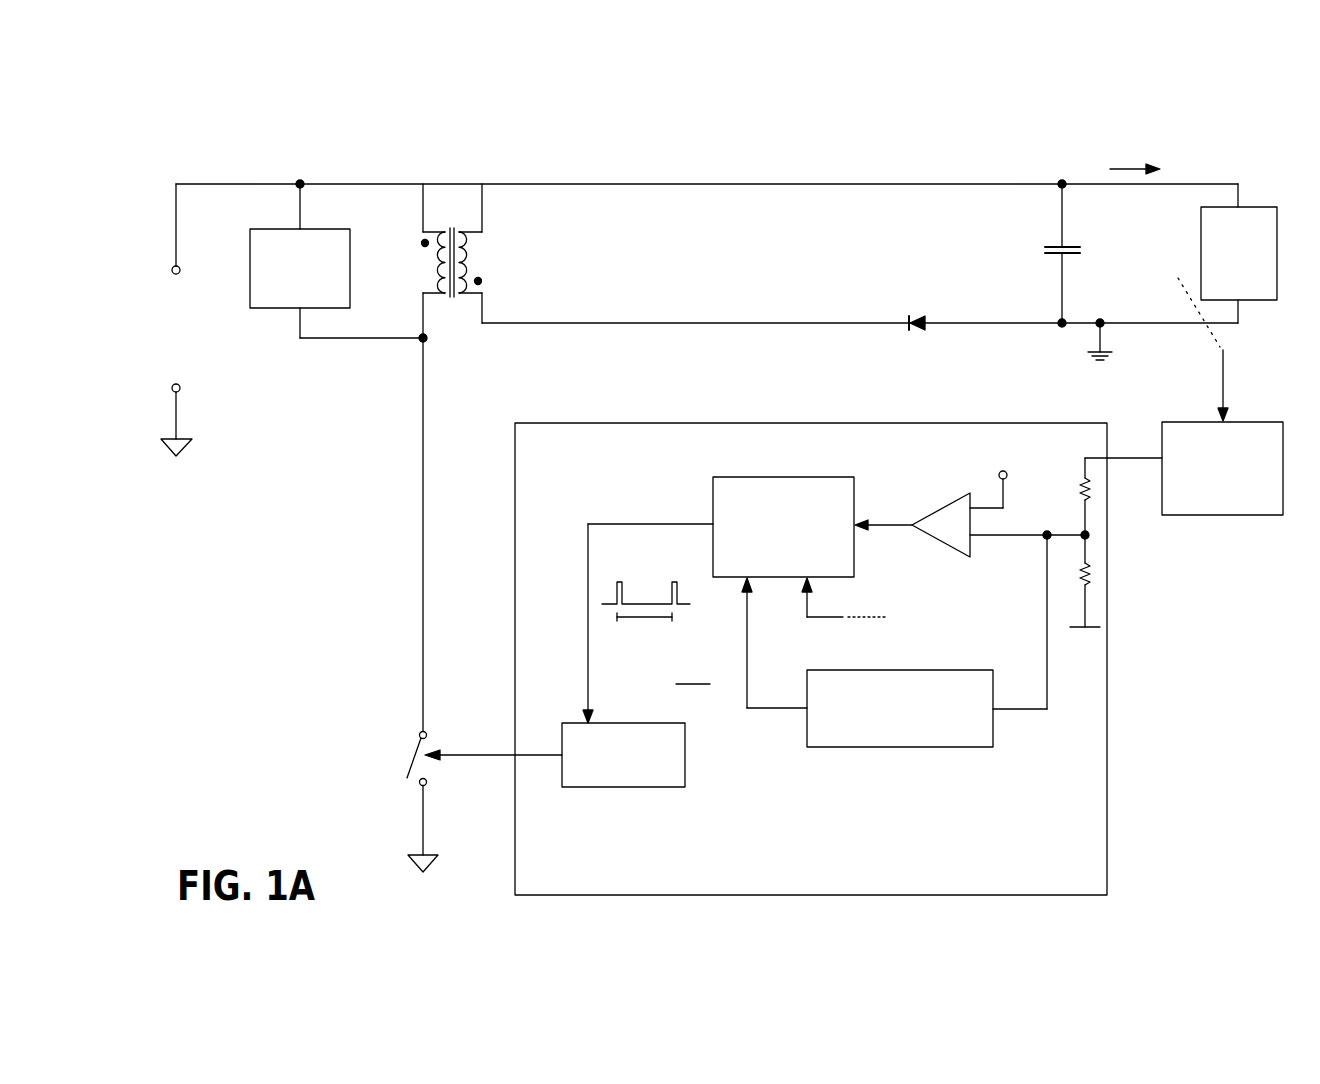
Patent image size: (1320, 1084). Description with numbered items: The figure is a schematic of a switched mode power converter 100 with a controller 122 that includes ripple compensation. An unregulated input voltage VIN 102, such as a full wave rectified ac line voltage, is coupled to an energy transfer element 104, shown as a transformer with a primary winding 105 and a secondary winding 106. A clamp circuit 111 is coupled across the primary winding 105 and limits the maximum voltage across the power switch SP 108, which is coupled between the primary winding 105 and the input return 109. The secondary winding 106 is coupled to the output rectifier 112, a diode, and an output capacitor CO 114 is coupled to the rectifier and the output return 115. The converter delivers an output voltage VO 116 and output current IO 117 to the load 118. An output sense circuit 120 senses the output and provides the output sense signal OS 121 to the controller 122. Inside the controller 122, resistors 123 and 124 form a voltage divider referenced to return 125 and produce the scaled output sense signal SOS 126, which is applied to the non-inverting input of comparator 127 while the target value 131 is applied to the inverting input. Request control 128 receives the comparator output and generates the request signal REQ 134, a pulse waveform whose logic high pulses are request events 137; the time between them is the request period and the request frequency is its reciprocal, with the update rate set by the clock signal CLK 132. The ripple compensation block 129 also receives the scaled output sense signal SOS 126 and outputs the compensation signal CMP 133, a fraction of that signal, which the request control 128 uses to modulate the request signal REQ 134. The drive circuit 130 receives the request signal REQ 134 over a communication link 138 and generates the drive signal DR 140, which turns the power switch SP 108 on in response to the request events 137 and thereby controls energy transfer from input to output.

The power converter 100 is at (1210, 111).
The input voltage VIN 102 is at (170, 331).
The energy transfer element 104 is at (445, 197).
The primary winding 105 is at (420, 270).
The secondary winding 106 is at (487, 278).
The power switch SP 108 is at (367, 764).
The input return 109 is at (178, 460).
The clamp circuit 111 is at (260, 244).
The output rectifier D1 112 is at (910, 279).
The output capacitor CO 114 is at (1006, 250).
The output return 115 is at (1086, 358).
The output voltage VO 116 is at (1112, 274).
The output current IO 117 is at (1108, 149).
The load 118 is at (1254, 311).
The output sense circuit 120 is at (1233, 522).
The output sense signal OS 121 is at (1135, 470).
The controller 122 is at (550, 419).
The resistor 123 is at (1076, 490).
The resistor 124 is at (1090, 577).
The return 125 is at (1084, 636).
The scaled output sense signal SOS 126 is at (1018, 543).
The comparator 127 is at (926, 515).
The request control 128 is at (778, 479).
The ripple compensation block 129 is at (968, 668).
The drive circuit 130 is at (620, 794).
The target value 131 is at (941, 456).
The clock signal CLK 132 is at (938, 620).
The compensation signal CMP 133 is at (766, 722).
The request signal REQ 134 is at (629, 500).
The request events 137 is at (672, 576).
The communication link 138 is at (586, 660).
The drive signal DR 140 is at (466, 763).